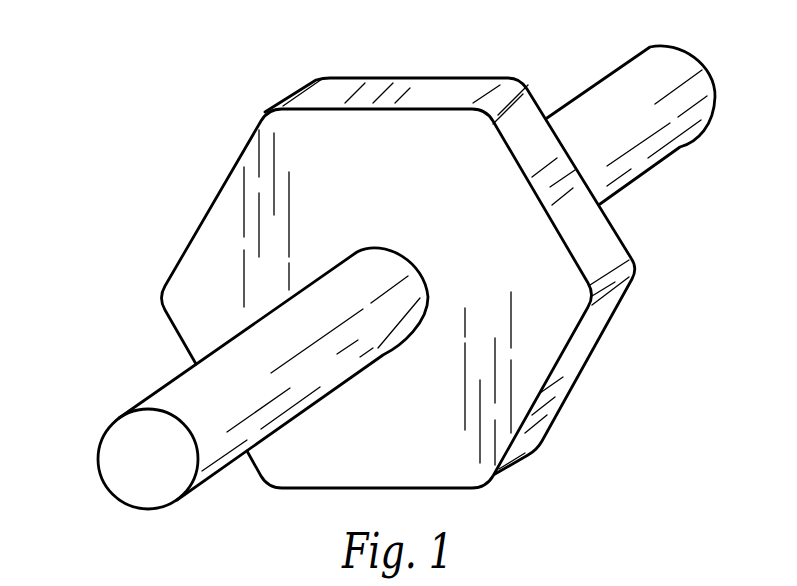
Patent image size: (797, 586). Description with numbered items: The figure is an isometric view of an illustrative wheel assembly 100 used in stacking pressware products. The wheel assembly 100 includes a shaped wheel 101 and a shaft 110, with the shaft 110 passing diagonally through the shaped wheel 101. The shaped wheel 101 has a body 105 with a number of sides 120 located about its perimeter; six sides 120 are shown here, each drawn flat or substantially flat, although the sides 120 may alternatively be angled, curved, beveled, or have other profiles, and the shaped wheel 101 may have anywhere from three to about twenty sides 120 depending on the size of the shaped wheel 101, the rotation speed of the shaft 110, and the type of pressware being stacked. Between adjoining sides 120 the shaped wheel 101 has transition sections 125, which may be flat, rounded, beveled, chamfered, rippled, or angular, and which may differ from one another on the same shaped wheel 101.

The wheel assembly 100 is at (150, 84).
The shaped wheel 101 is at (190, 212).
The body 105 is at (403, 152).
The shaft 110 is at (172, 396).
The side 120 is at (360, 87).
The transition section 125 is at (528, 83).